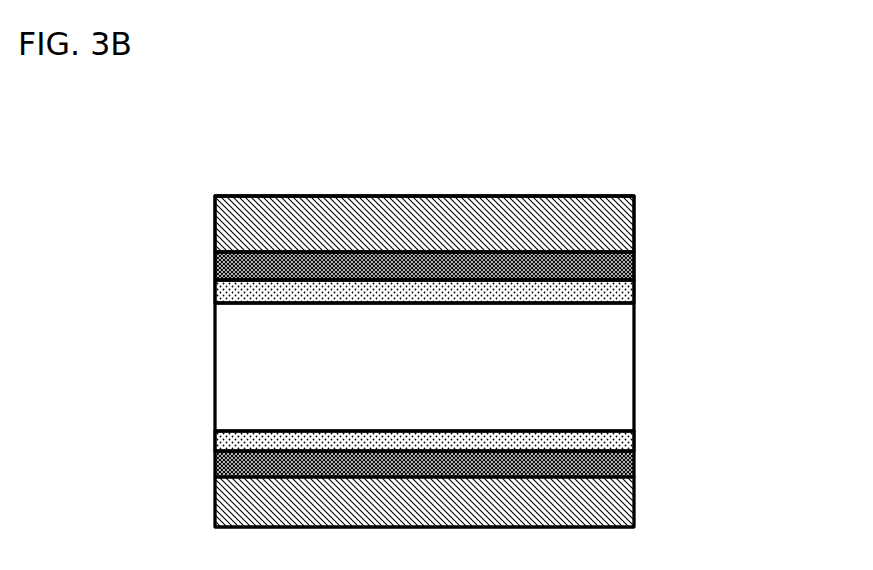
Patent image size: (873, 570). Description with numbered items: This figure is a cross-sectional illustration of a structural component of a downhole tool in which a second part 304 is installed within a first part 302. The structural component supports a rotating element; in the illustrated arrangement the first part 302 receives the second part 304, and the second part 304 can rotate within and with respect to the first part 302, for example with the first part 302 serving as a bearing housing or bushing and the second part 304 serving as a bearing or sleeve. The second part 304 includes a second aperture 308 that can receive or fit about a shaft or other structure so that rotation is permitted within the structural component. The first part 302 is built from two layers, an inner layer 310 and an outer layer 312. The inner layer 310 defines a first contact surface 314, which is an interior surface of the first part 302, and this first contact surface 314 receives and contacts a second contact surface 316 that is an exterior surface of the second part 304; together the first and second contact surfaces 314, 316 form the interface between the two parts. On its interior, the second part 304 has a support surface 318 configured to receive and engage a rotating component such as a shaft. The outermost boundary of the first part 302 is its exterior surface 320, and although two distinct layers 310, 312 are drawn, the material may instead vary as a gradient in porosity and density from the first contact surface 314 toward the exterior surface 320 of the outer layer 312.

The first part 302 is at (652, 193).
The second part 304 is at (635, 290).
The second aperture 308 is at (139, 357).
The inner layer 310 is at (215, 264).
The outer layer 312 is at (228, 229).
The first contact surface 314 is at (533, 280).
The second contact surface 316 is at (507, 450).
The support surface 318 is at (325, 305).
The exterior surface 320 is at (447, 196).